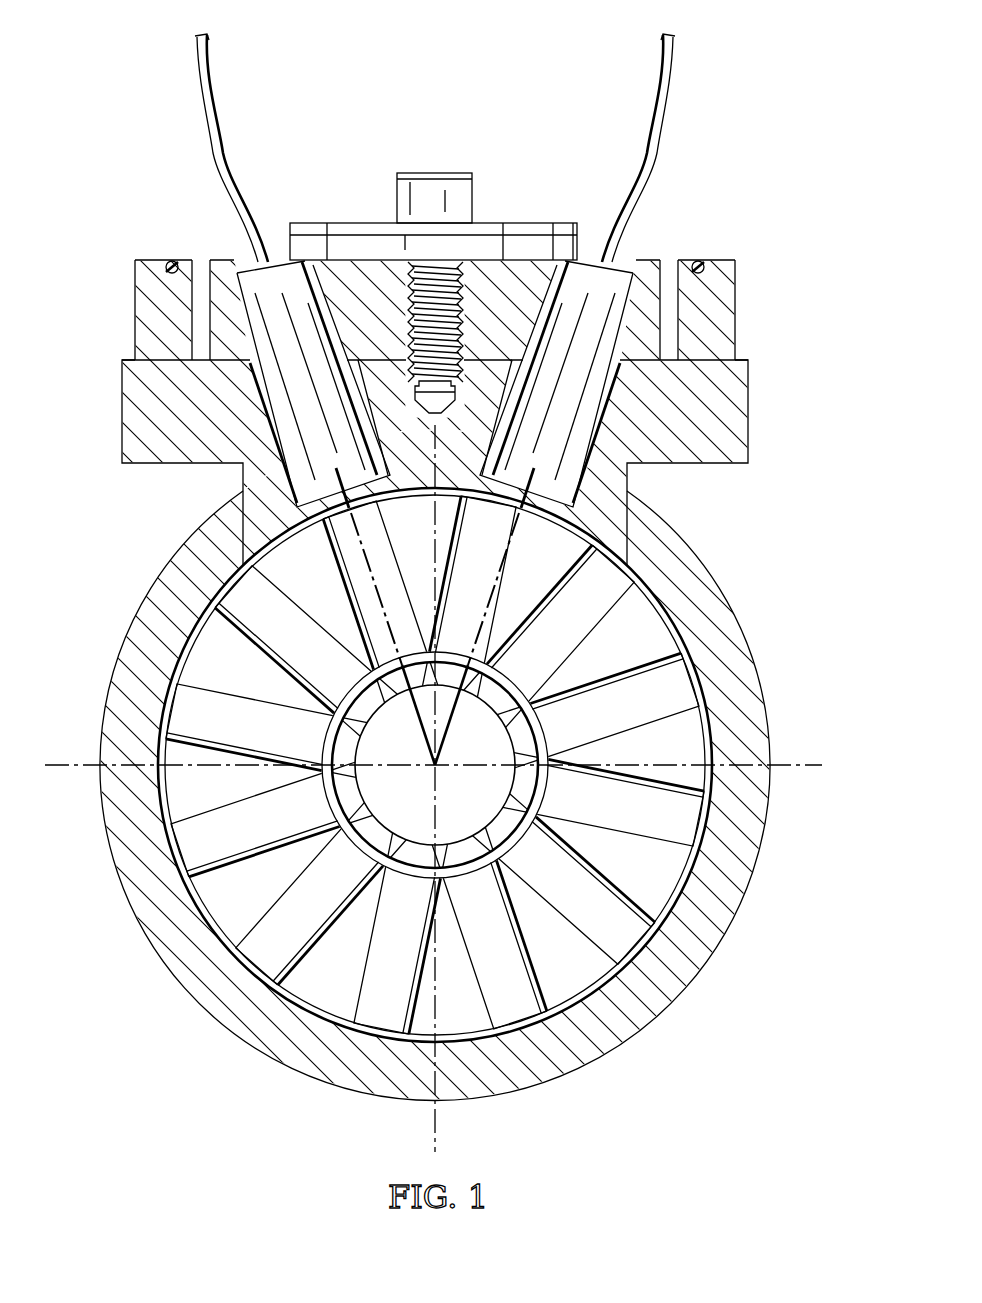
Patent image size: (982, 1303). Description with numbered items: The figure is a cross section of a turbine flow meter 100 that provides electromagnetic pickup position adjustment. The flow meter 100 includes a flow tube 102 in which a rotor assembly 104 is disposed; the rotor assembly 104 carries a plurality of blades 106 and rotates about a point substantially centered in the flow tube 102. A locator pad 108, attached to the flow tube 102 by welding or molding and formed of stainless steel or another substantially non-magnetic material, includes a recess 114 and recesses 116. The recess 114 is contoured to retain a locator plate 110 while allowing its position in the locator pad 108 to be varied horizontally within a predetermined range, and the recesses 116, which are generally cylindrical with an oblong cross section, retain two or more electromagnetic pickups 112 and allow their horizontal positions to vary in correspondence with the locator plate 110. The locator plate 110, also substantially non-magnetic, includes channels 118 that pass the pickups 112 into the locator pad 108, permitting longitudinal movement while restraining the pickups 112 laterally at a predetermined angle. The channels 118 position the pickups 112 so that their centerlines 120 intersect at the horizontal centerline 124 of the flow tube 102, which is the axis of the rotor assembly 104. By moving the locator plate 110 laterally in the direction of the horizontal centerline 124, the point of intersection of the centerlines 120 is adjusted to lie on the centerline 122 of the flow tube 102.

The turbine flow meter 100 is at (760, 58).
The flow tube 102 is at (598, 1052).
The rotor assembly 104 is at (452, 809).
The blades 106 is at (232, 733).
The locator pad 108 is at (116, 397).
The locator plate 110 is at (212, 252).
The electromagnetic pickups 112 is at (243, 268).
The recess 114 is at (200, 318).
The recesses 116 is at (287, 446).
The channels 118 is at (288, 262).
The centerlines of the pickups 120 is at (368, 566).
The centerline of the flow tube 122 is at (437, 1128).
The horizontal centerline 124 is at (438, 739).